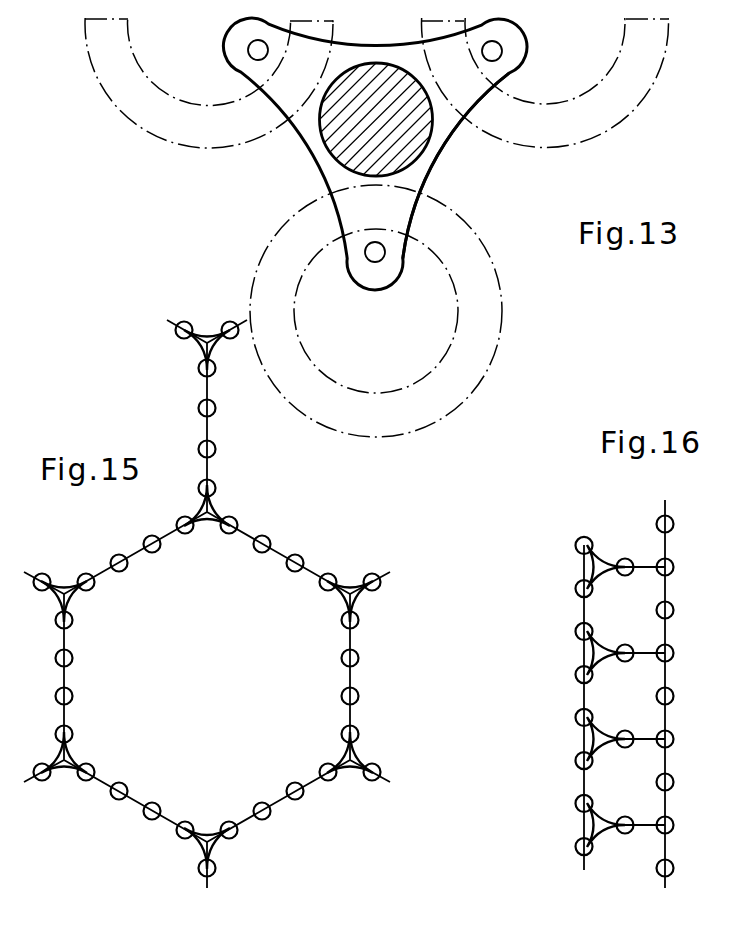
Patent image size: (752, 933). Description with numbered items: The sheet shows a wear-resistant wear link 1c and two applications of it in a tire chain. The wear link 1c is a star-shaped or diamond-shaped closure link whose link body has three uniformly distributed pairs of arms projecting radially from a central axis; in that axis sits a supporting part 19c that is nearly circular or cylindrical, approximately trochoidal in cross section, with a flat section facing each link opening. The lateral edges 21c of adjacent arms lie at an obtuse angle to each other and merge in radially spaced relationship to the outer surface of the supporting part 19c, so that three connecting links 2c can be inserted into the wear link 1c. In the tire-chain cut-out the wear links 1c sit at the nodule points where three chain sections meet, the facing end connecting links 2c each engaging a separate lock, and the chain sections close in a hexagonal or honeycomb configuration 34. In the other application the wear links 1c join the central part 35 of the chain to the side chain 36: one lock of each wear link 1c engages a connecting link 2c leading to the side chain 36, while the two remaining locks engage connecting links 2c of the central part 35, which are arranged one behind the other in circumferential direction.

In FIG. 13, the wear link 1c is at (466, 159).
In FIG. 15, the wear link 1c is at (207, 522).
In FIG. 16, the wear link 1c is at (594, 567).
In FIG. 13, the connecting link 2c is at (335, 22).
In FIG. 15, the connecting link 2c is at (230, 521).
In FIG. 16, the connecting link 2c is at (622, 560).
In FIG. 13, the supporting part 19c is at (385, 70).
In FIG. 13, the lateral edges 21c is at (484, 112).
In FIG. 15, the hexagonal structure 34 is at (296, 560).
In FIG. 16, the central part 35 is at (585, 532).
In FIG. 16, the side chain 36 is at (672, 593).